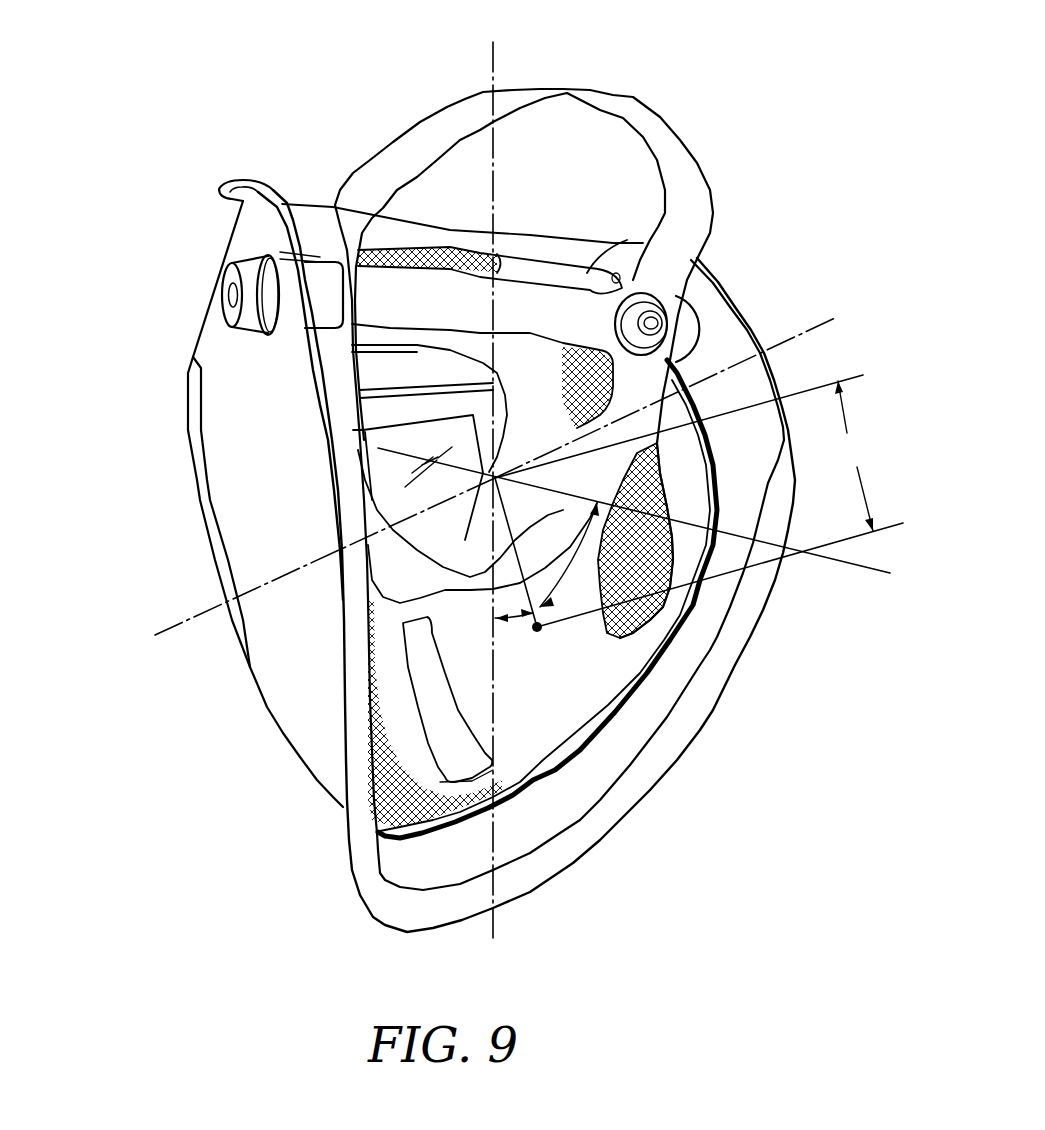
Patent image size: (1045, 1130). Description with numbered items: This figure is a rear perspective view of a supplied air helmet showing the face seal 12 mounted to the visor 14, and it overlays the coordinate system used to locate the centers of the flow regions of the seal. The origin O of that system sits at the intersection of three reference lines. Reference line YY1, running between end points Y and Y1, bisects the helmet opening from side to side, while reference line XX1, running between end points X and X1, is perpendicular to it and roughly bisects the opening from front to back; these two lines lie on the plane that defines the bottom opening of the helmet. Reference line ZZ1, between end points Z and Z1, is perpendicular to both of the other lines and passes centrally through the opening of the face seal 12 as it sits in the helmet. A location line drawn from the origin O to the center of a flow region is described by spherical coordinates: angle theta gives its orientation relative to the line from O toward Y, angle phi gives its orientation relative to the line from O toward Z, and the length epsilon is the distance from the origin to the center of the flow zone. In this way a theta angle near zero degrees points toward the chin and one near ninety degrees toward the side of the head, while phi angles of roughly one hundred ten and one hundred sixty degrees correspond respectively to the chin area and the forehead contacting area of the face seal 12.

The face seal 12 is at (660, 682).
The visor 14 is at (338, 852).
The origin O is at (495, 478).
The reference line XX1 end point X is at (311, 569).
The reference line XX1 end point X1 is at (681, 390).
The reference line YY1 end point Y is at (489, 728).
The reference line YY1 end point Y1 is at (497, 244).
The reference line ZZ1 end point Z is at (647, 520).
The reference line ZZ1 end point Z1 is at (173, 397).